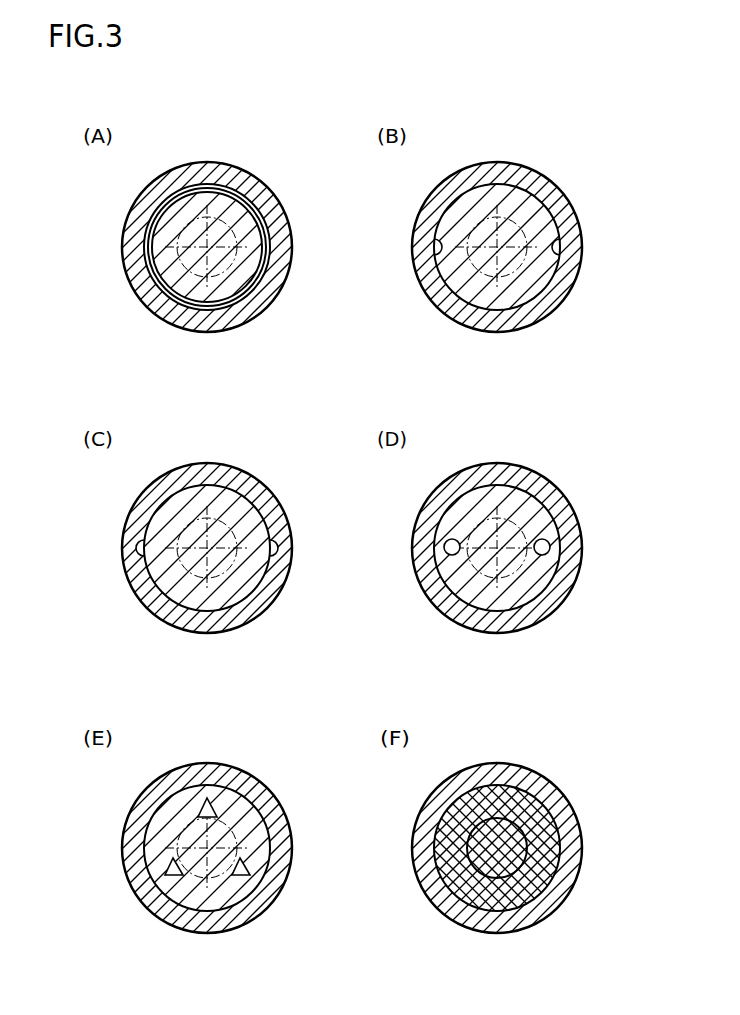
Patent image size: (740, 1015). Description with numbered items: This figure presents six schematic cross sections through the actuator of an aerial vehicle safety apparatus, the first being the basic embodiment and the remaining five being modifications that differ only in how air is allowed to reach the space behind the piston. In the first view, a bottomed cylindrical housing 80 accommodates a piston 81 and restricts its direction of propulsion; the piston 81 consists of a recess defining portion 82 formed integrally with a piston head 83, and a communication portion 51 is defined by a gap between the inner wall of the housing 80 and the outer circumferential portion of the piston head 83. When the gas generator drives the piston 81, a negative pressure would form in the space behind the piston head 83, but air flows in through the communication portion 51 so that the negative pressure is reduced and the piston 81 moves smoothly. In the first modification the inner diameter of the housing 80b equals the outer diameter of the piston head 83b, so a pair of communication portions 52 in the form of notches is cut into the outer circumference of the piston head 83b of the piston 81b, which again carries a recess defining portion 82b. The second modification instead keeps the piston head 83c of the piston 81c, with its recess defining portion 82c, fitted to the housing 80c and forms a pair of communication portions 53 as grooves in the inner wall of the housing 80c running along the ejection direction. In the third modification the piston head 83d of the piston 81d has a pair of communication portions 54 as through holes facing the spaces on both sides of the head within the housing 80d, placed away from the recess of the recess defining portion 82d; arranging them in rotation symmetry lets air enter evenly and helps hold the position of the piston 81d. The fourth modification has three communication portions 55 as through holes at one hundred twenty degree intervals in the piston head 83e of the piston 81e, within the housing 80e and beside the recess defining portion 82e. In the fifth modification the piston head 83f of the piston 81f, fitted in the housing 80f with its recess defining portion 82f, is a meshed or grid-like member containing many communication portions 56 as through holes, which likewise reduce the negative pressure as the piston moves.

The housing 80 is at (250, 186).
The piston 81 is at (208, 209).
The recess defining portion 82 is at (198, 187).
The piston head 83 is at (233, 122).
The communication portion 51 is at (268, 242).
The housing 80b is at (537, 185).
The piston 81b is at (490, 213).
The recess defining portion 82b is at (498, 185).
The piston head 83b is at (465, 217).
The communication portion 52 is at (558, 245).
The housing 80c is at (250, 484).
The piston 81c is at (208, 514).
The recess defining portion 82c is at (207, 488).
The piston head 83c is at (177, 522).
The communication portion 53 is at (275, 548).
The housing 80d is at (535, 482).
The piston 81d is at (490, 514).
The recess defining portion 82d is at (497, 488).
The piston head 83d is at (467, 523).
The communication portion 54 is at (558, 572).
The housing 80e is at (237, 775).
The piston 81e is at (208, 815).
The recess defining portion 82e is at (202, 790).
The piston head 83e is at (168, 823).
The communication portion 55 is at (212, 806).
The housing 80f is at (537, 788).
The piston 81f is at (490, 807).
The recess defining portion 82f is at (492, 817).
The piston head 83f is at (467, 807).
The communication portion 56 is at (540, 840).